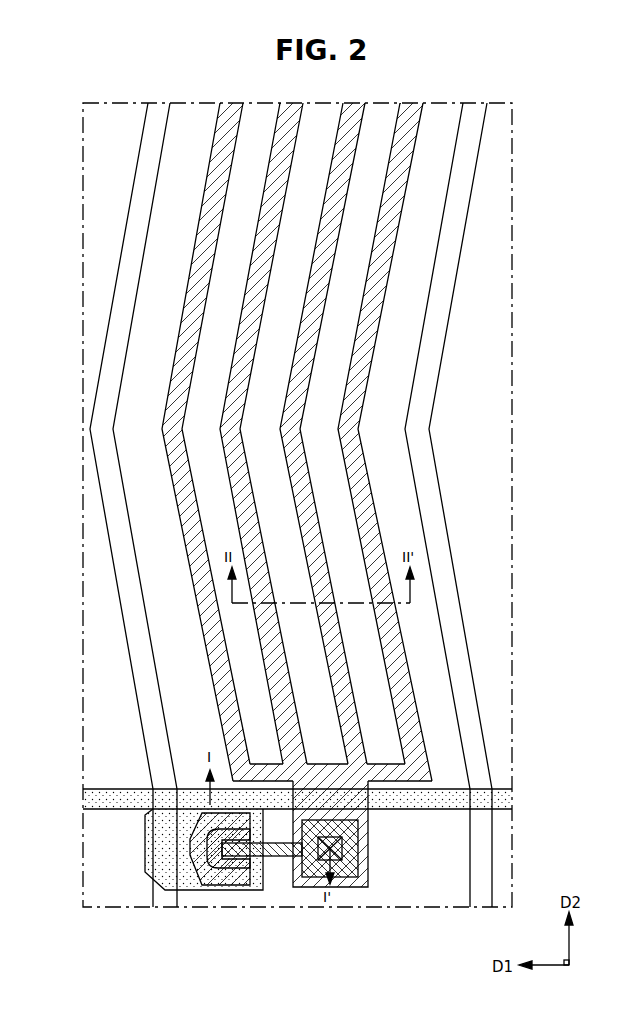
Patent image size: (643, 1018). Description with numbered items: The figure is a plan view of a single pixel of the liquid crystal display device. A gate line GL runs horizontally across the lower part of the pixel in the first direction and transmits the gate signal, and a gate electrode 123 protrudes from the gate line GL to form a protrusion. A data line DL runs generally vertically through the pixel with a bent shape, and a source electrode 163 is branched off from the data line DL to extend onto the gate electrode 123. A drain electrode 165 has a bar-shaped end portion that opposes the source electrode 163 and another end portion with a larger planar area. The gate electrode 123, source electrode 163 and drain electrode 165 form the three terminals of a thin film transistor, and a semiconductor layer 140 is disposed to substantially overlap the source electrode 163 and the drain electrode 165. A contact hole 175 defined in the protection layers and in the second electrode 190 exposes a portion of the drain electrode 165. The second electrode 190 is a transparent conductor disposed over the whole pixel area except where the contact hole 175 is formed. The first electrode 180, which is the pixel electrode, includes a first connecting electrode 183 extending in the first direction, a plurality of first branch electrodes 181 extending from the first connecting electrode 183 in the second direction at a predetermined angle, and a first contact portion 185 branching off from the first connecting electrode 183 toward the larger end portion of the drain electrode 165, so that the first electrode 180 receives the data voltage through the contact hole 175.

The second electrode 190 is at (475, 428).
The data line DL is at (110, 503).
The gate line GL is at (93, 797).
The gate electrode 123 is at (143, 848).
The semiconductor layer 140 is at (221, 865).
The source electrode 163 is at (190, 822).
The drain electrode 165 is at (237, 858).
The contact hole 175 is at (338, 863).
The first electrode 180 is at (386, 495).
The first branch electrodes 181 is at (405, 700).
The first connecting electrode 183 is at (405, 772).
The first contact portion 185 is at (368, 823).